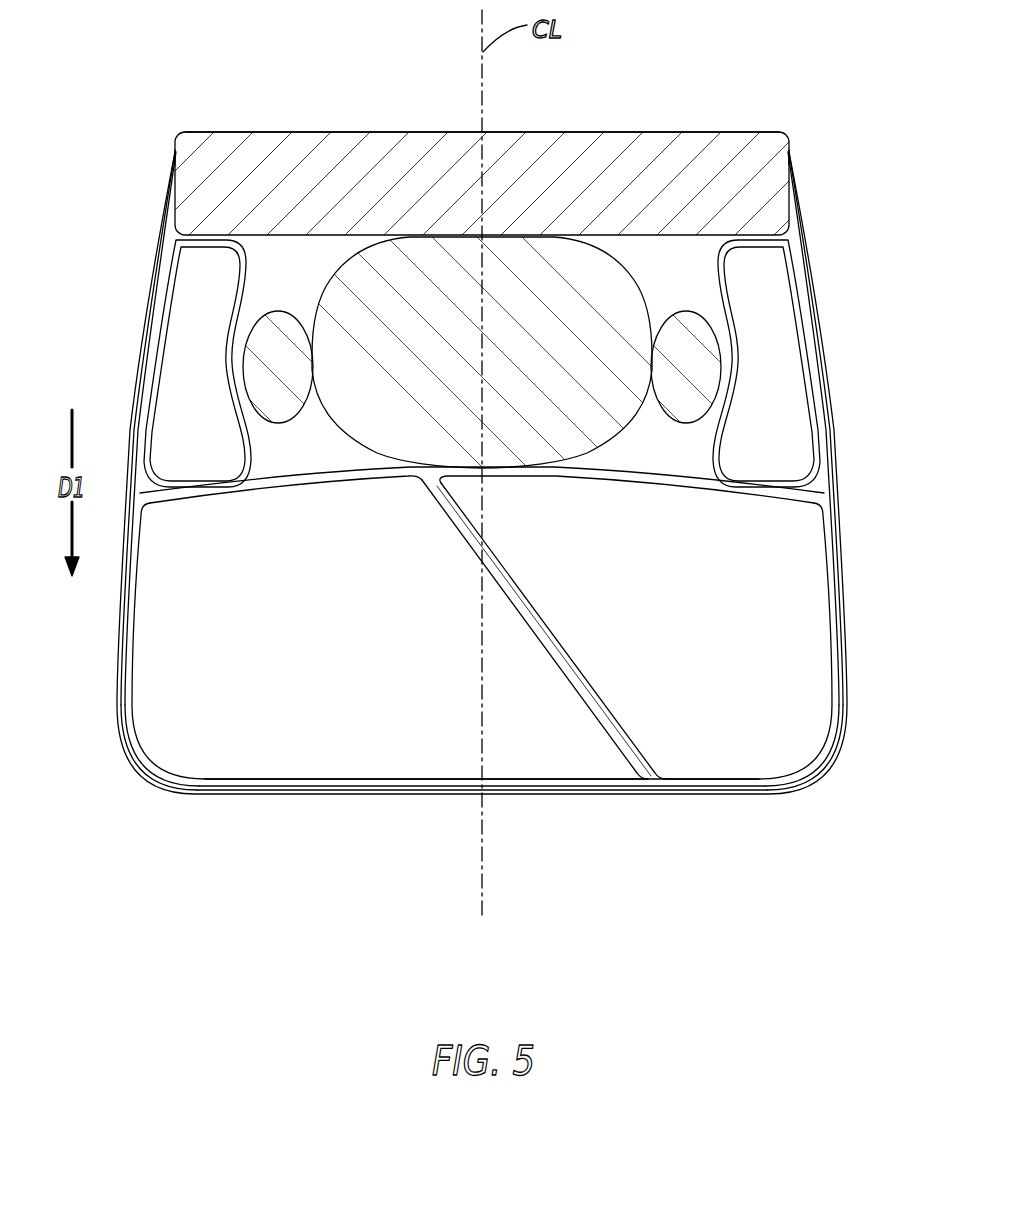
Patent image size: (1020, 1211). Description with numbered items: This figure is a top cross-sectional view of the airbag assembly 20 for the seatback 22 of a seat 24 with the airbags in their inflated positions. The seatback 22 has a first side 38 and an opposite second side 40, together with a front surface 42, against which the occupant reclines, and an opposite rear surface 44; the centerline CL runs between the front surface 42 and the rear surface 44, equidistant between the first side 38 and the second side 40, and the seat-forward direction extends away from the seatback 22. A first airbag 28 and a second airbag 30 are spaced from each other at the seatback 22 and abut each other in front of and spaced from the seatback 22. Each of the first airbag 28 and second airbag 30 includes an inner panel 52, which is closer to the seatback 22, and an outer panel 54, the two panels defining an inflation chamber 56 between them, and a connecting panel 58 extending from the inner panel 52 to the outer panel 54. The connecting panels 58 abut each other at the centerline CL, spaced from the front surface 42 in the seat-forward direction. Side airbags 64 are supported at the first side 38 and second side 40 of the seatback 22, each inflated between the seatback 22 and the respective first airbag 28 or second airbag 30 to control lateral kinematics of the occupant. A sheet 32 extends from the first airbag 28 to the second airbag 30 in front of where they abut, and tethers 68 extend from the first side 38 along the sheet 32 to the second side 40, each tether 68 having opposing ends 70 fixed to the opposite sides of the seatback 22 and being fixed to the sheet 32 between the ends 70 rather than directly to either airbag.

The airbag assembly 20 is at (462, 460).
The seatback 22 is at (651, 132).
The seat 24 is at (474, 126).
The first airbag 28 is at (262, 790).
The second airbag 30 is at (716, 790).
The sheet 32 is at (143, 472).
The first side 38 is at (168, 212).
The second side 40 is at (797, 212).
The front surface 42 is at (681, 240).
The rear surface 44 is at (584, 132).
The inner panel 52 is at (306, 478).
The outer panel 54 is at (315, 778).
The inflation chamber 56 is at (303, 636).
The connecting panel 58 is at (537, 610).
The side airbag 64 is at (247, 462).
The tether 68 is at (158, 250).
The end 70 is at (175, 150).